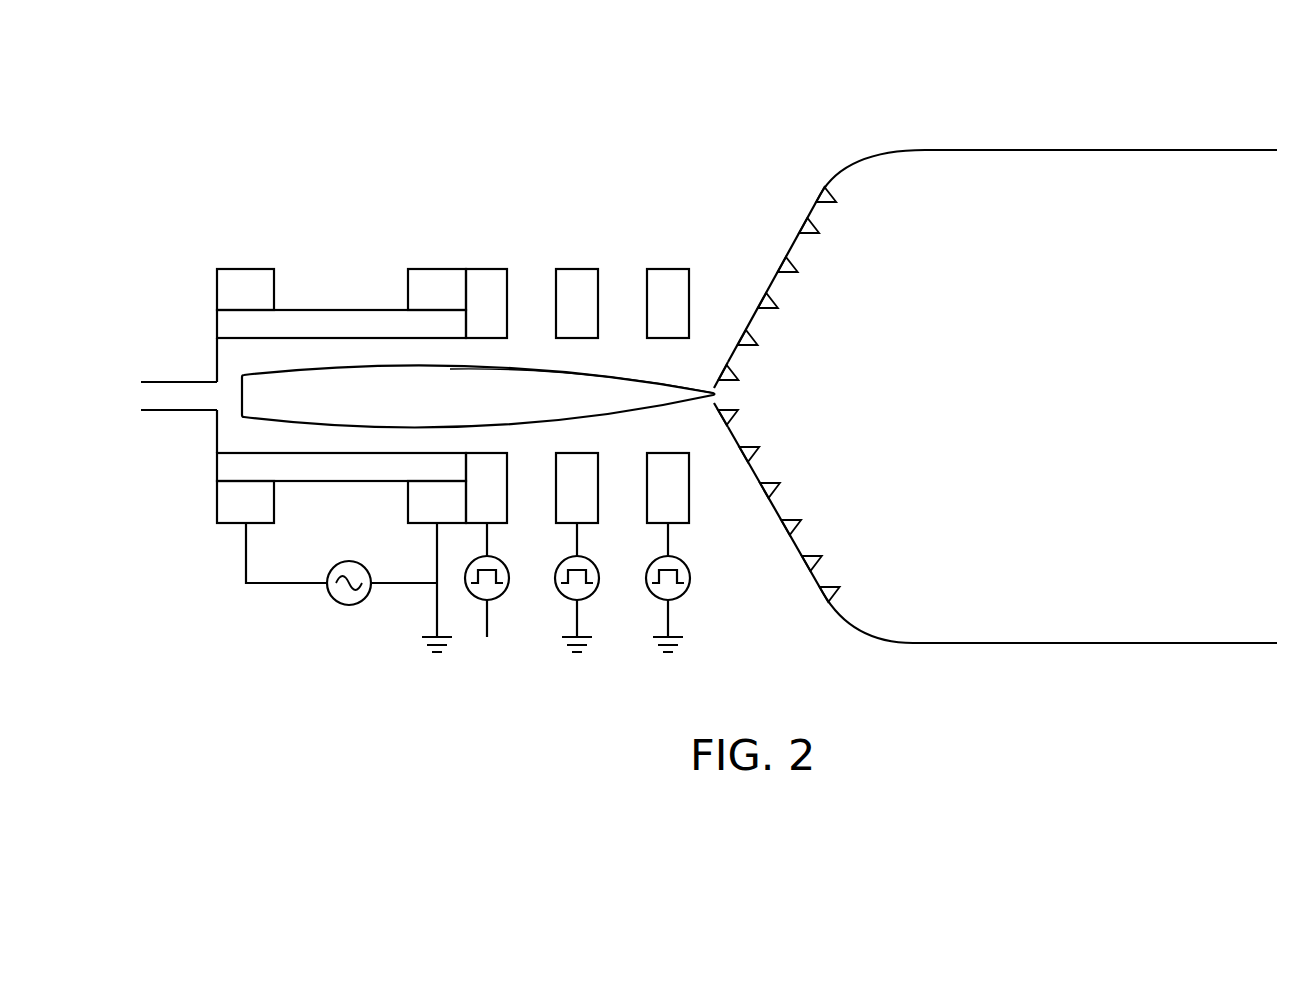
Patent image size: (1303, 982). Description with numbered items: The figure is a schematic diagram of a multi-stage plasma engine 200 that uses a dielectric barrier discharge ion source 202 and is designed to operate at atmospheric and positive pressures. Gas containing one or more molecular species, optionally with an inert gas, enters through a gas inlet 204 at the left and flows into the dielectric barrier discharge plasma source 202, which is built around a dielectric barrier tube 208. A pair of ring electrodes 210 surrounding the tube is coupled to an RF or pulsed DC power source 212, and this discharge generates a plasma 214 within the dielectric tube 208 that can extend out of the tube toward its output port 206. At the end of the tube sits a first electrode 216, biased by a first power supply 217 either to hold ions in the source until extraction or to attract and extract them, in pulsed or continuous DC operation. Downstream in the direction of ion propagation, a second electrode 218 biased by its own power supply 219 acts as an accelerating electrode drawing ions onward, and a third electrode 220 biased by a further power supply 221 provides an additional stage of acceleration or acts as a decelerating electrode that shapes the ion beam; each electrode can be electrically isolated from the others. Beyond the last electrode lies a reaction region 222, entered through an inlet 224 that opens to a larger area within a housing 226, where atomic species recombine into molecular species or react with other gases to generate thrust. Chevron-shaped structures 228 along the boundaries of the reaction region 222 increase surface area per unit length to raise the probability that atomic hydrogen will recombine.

The multi-stage plasma engine 200 is at (198, 154).
The dielectric barrier discharge plasma source 202 is at (340, 270).
The gas inlet 204 is at (141, 396).
The output port 206 is at (480, 352).
The dielectric barrier tube 208 is at (217, 324).
The ring electrodes 210 is at (246, 269).
The RF or pulsed DC power source 212 is at (349, 606).
The plasma 214 is at (478, 396).
The first electrode 216 is at (485, 483).
The first power supply 217 is at (467, 596).
The second electrode 218 is at (577, 269).
The power supply 219 is at (555, 597).
The third electrode 220 is at (668, 269).
The power supply 221 is at (646, 597).
The reaction region 222 is at (1002, 511).
The inlet 224 is at (745, 395).
The housing 226 is at (1100, 150).
The structures 228 is at (793, 265).